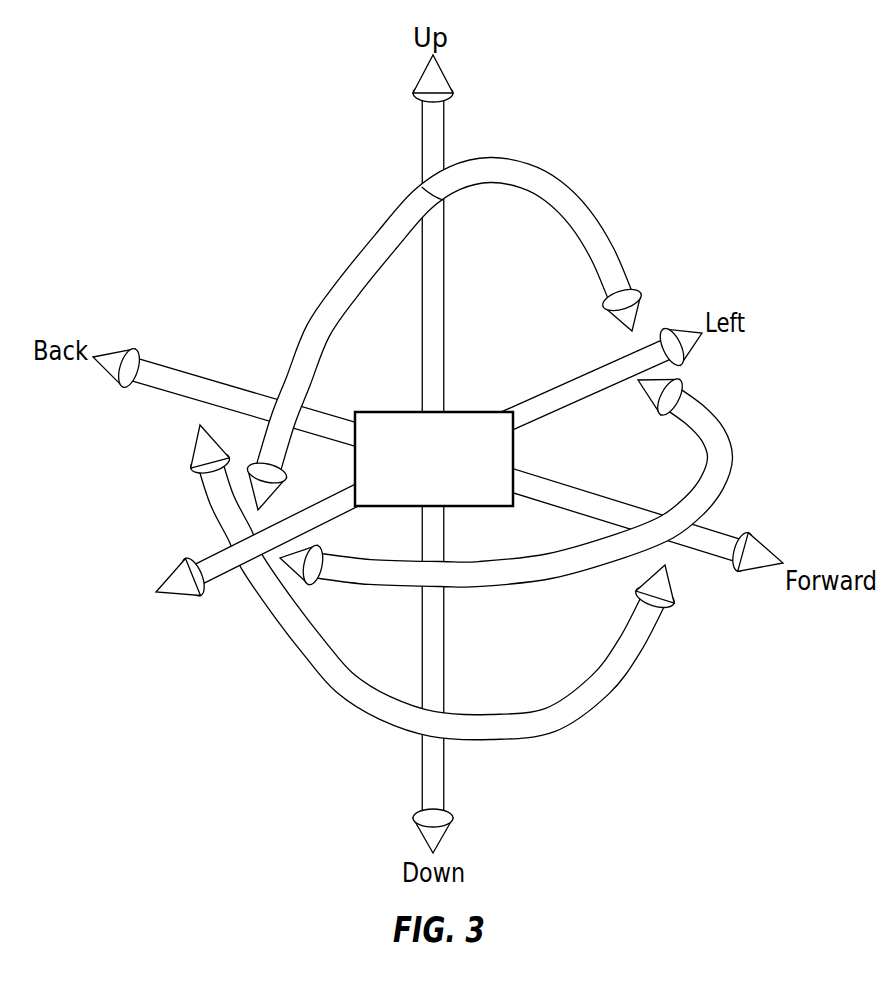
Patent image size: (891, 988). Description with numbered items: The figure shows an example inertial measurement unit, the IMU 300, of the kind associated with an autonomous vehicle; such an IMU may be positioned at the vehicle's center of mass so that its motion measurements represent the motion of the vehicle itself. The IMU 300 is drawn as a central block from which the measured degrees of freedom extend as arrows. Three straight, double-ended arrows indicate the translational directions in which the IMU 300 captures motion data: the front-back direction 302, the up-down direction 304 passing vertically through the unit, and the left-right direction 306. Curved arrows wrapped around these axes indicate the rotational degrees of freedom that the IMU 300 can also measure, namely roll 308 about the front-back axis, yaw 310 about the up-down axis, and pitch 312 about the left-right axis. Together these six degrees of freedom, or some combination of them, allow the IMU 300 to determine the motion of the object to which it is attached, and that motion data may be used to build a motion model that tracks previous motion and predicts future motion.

The inertial measurement unit (IMU) 300 is at (450, 487).
The front-back direction 302 is at (153, 388).
The up-down direction 304 is at (445, 131).
The left-right direction 306 is at (193, 553).
The roll 308 is at (610, 243).
The yaw 310 is at (714, 420).
The pitch 312 is at (650, 647).